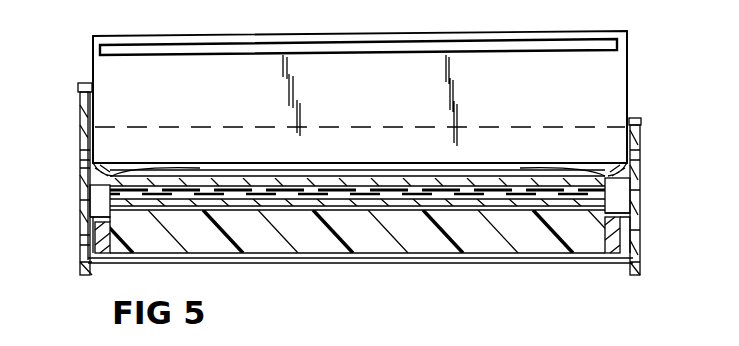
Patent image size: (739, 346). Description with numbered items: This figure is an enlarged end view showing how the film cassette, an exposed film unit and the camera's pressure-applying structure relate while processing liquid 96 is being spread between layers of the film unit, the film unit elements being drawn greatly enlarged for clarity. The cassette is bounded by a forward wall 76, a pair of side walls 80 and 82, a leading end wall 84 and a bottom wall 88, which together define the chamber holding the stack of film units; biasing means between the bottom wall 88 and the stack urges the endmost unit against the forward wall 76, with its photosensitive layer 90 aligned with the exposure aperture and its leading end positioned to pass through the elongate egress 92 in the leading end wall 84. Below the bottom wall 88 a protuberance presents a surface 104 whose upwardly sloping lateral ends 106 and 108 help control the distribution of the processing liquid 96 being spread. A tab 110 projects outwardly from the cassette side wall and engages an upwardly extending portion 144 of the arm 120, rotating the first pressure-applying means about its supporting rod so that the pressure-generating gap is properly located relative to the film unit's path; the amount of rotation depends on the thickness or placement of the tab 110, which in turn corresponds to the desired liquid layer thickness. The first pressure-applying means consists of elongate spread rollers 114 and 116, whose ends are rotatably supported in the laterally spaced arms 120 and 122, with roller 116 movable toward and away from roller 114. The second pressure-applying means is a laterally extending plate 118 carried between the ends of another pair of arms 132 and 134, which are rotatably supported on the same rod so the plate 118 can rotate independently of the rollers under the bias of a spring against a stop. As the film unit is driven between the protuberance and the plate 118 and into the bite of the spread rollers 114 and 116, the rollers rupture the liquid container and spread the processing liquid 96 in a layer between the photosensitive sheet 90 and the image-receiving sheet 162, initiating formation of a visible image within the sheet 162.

The forward wall 76 is at (420, 33).
The side wall 80 is at (92, 70).
The side wall 82 is at (628, 67).
The leading end wall 84 is at (394, 97).
The bottom wall 88 is at (476, 123).
The photosensitive layer 90 is at (520, 148).
The elongate egress 92 is at (507, 43).
The processing liquid 96 is at (205, 177).
The surface 104 is at (378, 177).
The lateral end 106 is at (100, 166).
The lateral end 108 is at (626, 172).
The tab 110 is at (80, 87).
The spread roller 114 is at (92, 186).
The spread roller 116 is at (303, 264).
The plate 118 is at (386, 249).
The arm 120 is at (80, 220).
The arm 122 is at (641, 128).
The arm 132 is at (103, 259).
The arm 134 is at (606, 252).
The upwardly extending portion 144 is at (80, 108).
The image-receiving sheet 162 is at (500, 264).